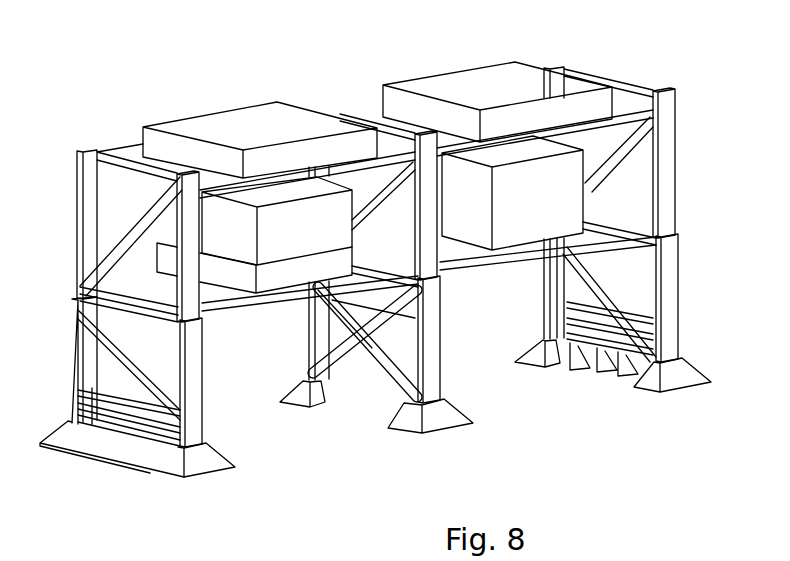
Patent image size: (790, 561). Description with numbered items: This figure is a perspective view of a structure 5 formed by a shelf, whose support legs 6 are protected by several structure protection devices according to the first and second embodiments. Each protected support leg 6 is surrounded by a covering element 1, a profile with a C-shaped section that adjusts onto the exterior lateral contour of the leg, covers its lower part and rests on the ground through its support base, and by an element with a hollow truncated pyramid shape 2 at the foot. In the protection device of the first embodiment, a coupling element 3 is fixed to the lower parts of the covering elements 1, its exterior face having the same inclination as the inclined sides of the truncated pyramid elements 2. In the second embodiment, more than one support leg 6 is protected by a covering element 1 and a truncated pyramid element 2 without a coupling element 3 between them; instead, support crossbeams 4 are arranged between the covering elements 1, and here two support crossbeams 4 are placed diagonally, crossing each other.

The covering element 1 is at (75, 348).
The element with a hollow truncated pyramid shape 2 is at (205, 460).
The coupling element 3 is at (125, 447).
The support crossbeam 4 is at (97, 398).
The structure 5 is at (350, 72).
The support leg 6 is at (88, 248).